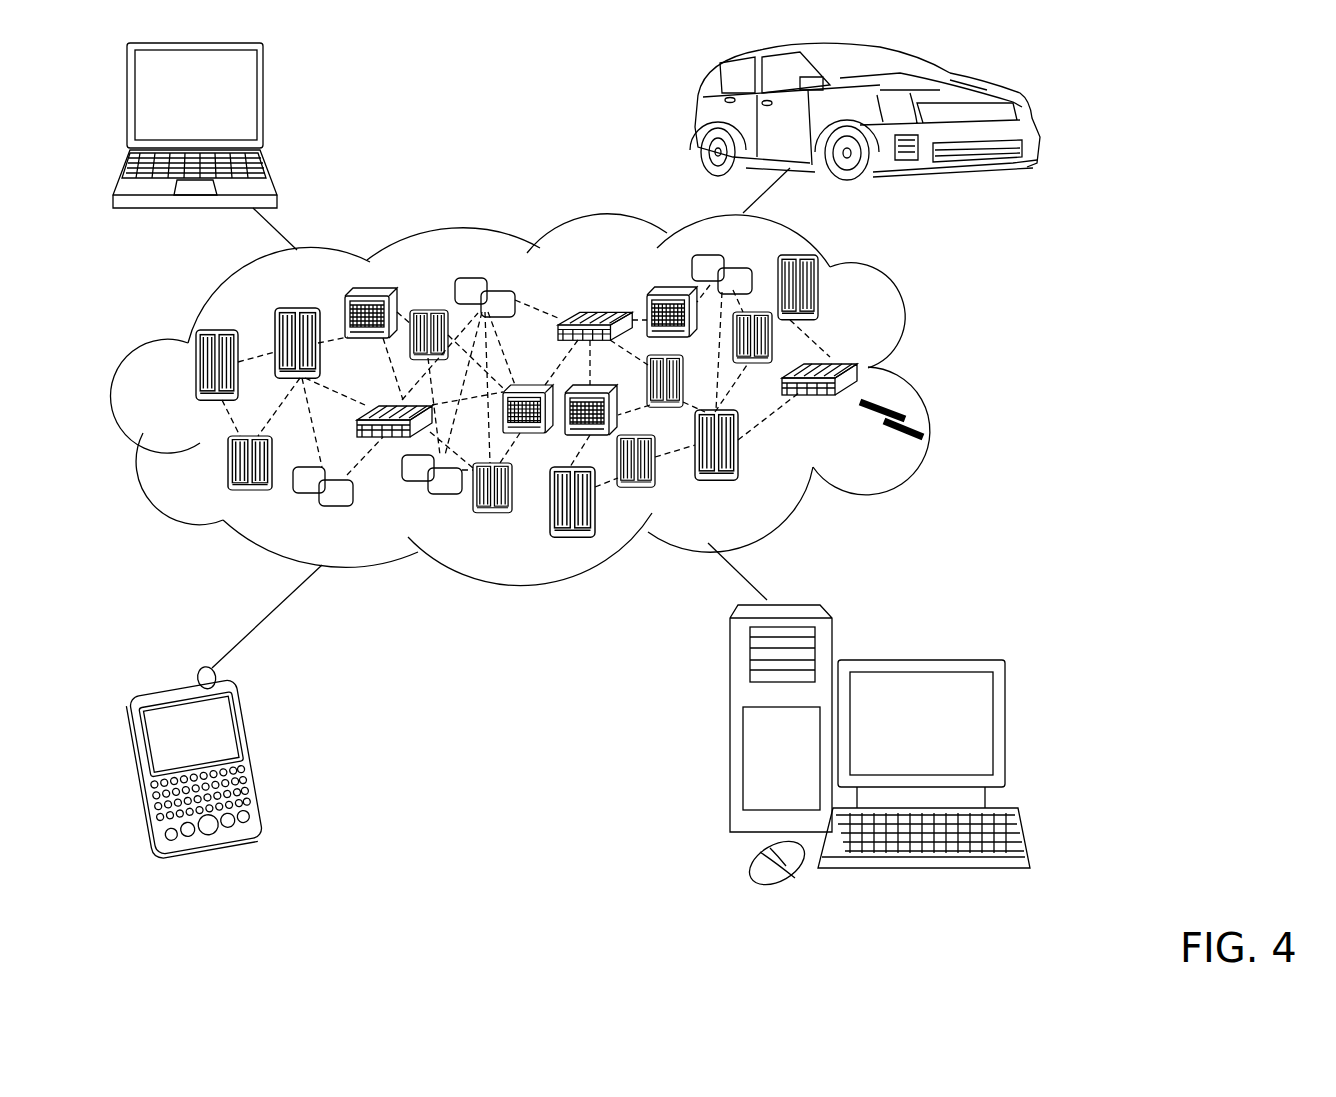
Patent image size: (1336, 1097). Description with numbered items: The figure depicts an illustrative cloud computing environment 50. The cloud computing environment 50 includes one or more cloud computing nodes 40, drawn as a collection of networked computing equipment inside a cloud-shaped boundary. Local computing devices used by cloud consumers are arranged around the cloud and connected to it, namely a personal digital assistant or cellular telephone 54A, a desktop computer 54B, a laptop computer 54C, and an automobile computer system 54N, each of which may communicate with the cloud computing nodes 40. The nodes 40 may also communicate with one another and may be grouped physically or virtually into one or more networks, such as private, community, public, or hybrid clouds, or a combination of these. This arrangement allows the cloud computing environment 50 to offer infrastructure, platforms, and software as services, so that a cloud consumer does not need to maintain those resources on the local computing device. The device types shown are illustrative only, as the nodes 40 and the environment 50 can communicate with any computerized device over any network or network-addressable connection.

The laptop computer 54C is at (263, 106).
The automobile computer system 54N is at (698, 120).
The cloud computing environment 50 is at (920, 370).
The cloud computing nodes 40 is at (911, 427).
The personal digital assistant (PDA) or cellular telephone 54A is at (260, 755).
The desktop computer 54B is at (920, 658).